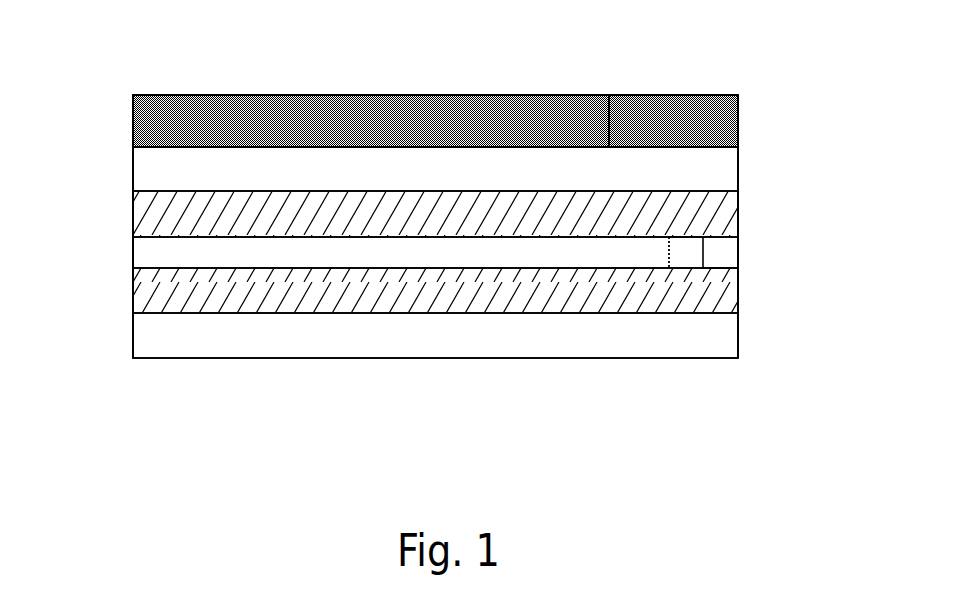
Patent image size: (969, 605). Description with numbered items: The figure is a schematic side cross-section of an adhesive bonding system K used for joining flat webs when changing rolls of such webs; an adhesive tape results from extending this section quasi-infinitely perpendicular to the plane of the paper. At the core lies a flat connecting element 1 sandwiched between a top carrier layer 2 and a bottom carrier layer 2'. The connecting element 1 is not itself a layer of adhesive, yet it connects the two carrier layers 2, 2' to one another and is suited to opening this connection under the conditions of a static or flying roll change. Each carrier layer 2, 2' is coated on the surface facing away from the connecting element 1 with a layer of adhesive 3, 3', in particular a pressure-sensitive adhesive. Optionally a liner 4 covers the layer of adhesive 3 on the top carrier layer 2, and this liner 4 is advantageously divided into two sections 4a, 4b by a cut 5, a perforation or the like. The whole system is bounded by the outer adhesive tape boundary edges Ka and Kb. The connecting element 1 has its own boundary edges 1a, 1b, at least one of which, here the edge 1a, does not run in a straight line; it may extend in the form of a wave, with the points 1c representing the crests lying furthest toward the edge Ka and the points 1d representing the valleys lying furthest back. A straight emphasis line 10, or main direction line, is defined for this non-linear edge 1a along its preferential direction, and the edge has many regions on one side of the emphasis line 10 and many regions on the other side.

The flat connecting element 1 is at (407, 255).
The connecting element boundary edge 1a is at (742, 252).
The connecting element boundary edge 1b is at (129, 256).
The points lying furthest toward edge Ka 1c is at (732, 262).
The points lying furthest back 1d is at (670, 262).
The top carrier layer 2 is at (486, 214).
The bottom carrier layer 2' is at (487, 291).
The layer of adhesive 3 is at (473, 169).
The layer of adhesive 3' is at (483, 338).
The liner 4 is at (437, 115).
The liner section 4a is at (315, 122).
The liner section 4b is at (665, 120).
The cut 5 is at (609, 95).
The emphasis line 10 is at (697, 247).
The adhesive bonding system K is at (320, 382).
The outer adhesive tape boundary edge Ka is at (737, 365).
The outer adhesive tape boundary edge Kb is at (133, 365).